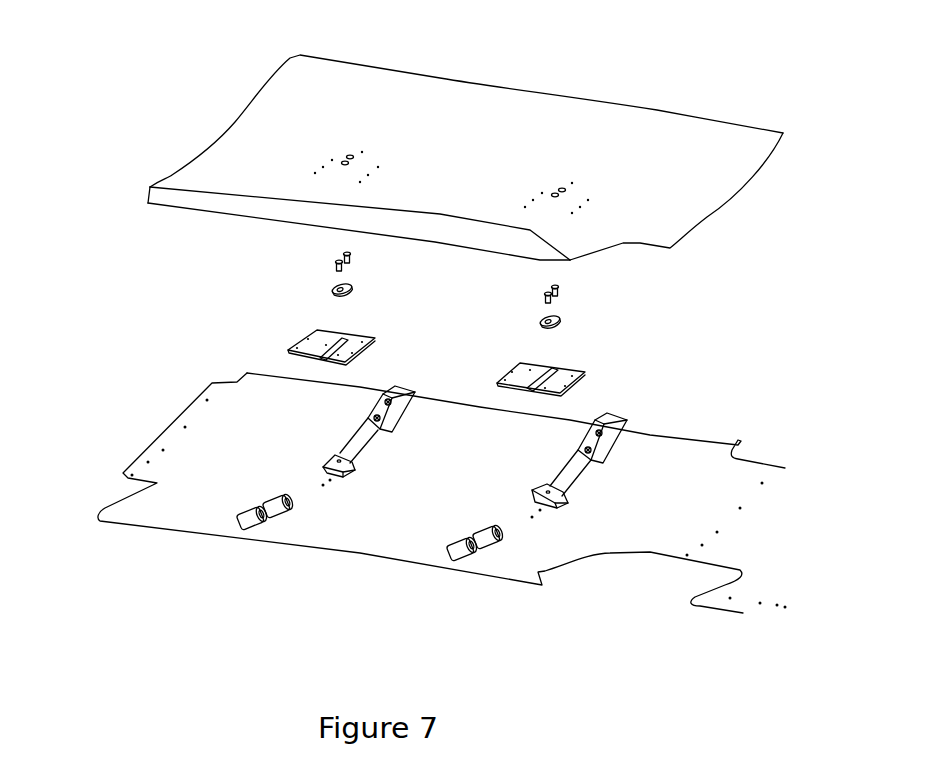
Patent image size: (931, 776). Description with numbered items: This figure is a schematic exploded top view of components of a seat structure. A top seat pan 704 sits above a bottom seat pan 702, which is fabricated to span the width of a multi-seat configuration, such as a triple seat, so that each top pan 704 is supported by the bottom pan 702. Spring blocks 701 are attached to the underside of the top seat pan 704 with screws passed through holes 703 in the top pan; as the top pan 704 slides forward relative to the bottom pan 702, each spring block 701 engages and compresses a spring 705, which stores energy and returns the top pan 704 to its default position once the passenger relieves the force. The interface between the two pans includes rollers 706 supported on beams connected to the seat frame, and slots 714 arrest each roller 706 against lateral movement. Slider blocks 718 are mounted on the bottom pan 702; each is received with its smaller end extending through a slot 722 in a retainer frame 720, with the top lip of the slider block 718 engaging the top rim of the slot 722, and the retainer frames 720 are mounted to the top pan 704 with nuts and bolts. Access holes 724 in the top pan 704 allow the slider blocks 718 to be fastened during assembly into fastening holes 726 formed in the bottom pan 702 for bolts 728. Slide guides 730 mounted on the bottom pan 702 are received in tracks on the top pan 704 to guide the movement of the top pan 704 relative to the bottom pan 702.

The spring block 701 is at (330, 462).
The bottom seat pan 702 is at (157, 483).
The holes in the top seat pan 703 is at (360, 137).
The top seat pan 704 is at (250, 153).
The spring 705 is at (352, 442).
The roller 706 is at (450, 551).
The slot 714 is at (487, 572).
The slider block 718 is at (330, 292).
The retainer frame 720 is at (577, 372).
The slot in the retainer frame 722 is at (537, 370).
The access hole 724 is at (562, 176).
The fastening hole 726 is at (527, 503).
The bolt 728 is at (574, 289).
The slide guide 730 is at (363, 420).